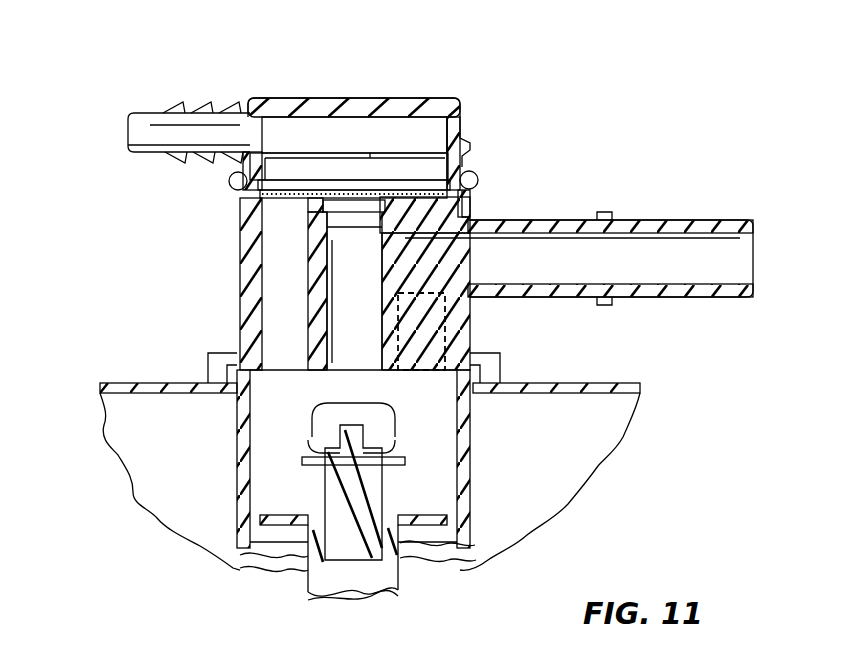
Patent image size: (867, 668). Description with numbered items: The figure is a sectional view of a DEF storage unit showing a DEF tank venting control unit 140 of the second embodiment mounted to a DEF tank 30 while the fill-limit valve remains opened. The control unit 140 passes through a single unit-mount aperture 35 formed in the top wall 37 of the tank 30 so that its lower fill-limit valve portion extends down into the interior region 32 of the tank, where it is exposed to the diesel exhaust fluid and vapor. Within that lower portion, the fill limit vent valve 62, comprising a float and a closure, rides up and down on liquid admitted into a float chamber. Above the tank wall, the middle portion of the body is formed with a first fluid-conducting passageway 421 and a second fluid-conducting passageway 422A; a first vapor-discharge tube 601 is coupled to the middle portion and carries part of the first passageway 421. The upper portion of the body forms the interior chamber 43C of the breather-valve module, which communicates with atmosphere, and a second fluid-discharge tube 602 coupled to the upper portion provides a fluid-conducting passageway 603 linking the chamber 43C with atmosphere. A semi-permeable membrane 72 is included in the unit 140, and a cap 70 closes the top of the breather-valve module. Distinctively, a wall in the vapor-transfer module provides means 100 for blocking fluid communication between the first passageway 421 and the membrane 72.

The DEF tank venting control unit 140 is at (531, 79).
The cap 70 is at (404, 136).
The interior chamber 43C is at (327, 133).
The second fluid-discharge tube 602 is at (160, 96).
The fluid-conducting passageway 603 is at (157, 138).
The semi-permeable membrane 72 is at (474, 195).
The second fluid-conducting passageway 422A is at (285, 260).
The means for blocking fluid communication 100 is at (353, 228).
The first vapor-discharge tube 601 is at (665, 209).
The first fluid-conducting passageway 421 is at (513, 253).
The unit-mount aperture 35 is at (478, 405).
The fill limit vent valve 62 is at (429, 485).
The interior region 32 is at (157, 409).
The top wall 37 is at (596, 383).
The DEF tank 30 is at (94, 427).